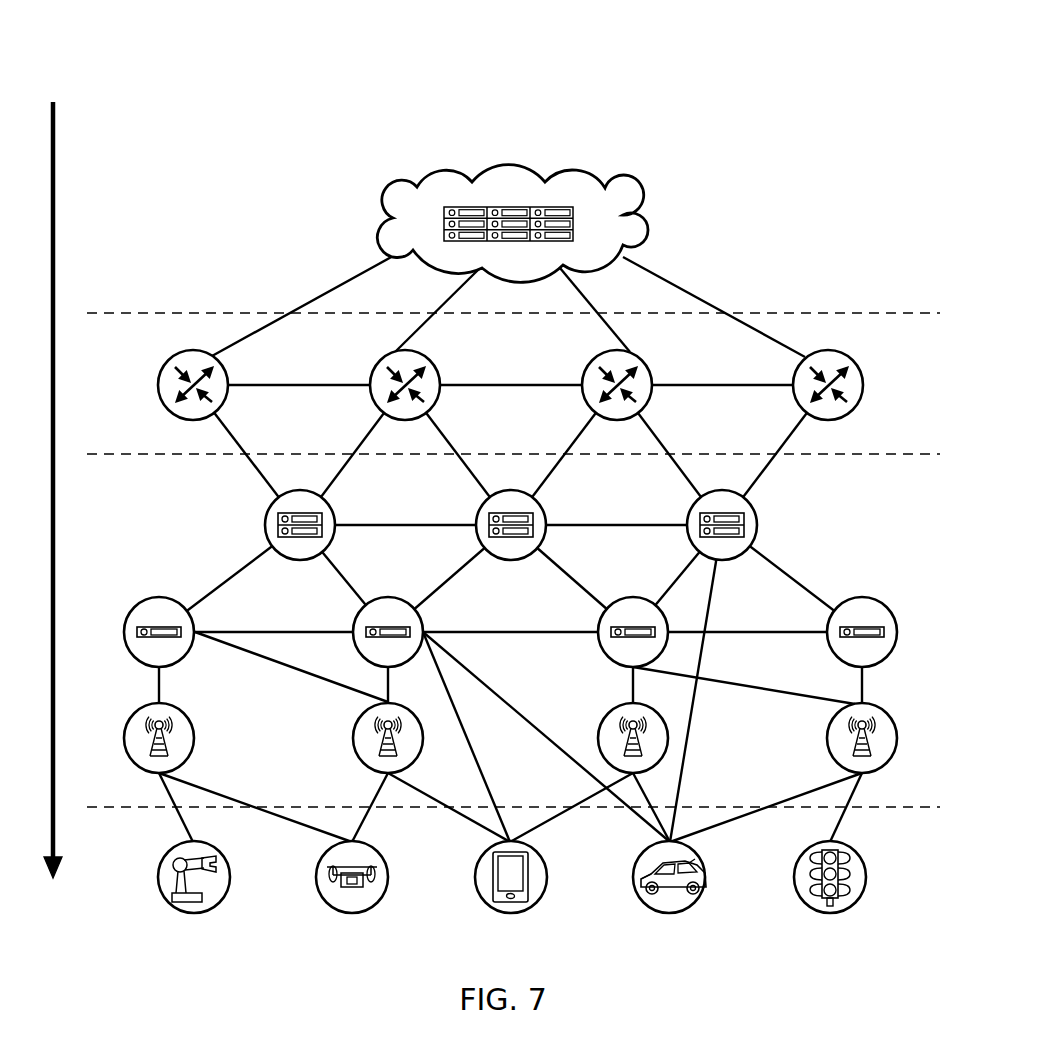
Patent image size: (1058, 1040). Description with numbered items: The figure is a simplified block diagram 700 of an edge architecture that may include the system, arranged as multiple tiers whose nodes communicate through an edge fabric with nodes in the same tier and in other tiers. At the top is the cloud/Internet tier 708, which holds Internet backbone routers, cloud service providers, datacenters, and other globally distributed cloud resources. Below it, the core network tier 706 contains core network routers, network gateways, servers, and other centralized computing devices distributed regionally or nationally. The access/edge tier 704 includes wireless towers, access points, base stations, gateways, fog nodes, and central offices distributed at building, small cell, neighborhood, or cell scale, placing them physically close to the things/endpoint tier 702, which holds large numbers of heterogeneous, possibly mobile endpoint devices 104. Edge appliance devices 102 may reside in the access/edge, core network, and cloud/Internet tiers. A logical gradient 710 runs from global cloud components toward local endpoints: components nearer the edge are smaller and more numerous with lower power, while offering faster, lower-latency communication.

The diagram 700 is at (917, 78).
The logical gradient 710 is at (53, 140).
The cloud/Internet tier 708 is at (118, 236).
The core network tier 706 is at (118, 378).
The access/edge tier 704 is at (118, 520).
The things/endpoint tier 702 is at (503, 894).
The edge appliance device 102 is at (927, 540).
The endpoint device 104 is at (895, 912).